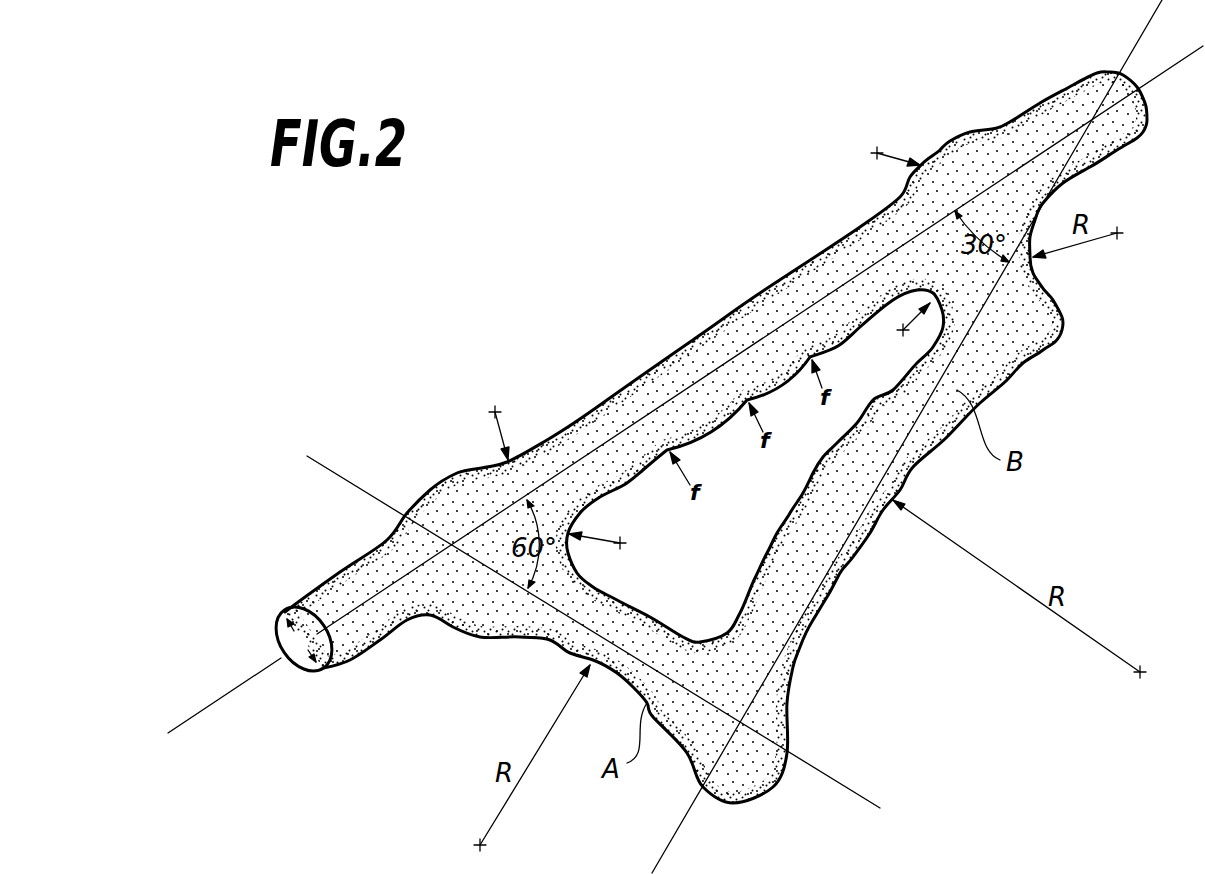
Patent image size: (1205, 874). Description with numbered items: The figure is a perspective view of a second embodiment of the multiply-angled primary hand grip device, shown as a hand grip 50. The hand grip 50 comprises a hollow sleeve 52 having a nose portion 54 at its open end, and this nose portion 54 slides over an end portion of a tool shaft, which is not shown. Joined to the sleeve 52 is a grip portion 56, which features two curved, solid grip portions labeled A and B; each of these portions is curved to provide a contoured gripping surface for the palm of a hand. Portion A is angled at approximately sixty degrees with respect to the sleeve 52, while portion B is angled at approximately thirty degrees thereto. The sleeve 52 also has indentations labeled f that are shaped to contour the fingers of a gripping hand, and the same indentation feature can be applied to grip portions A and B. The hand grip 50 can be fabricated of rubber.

The hand grip 50 is at (702, 322).
The hollow sleeve 52 is at (810, 273).
The nose portion 54 is at (297, 670).
The grip portion 56 is at (847, 583).